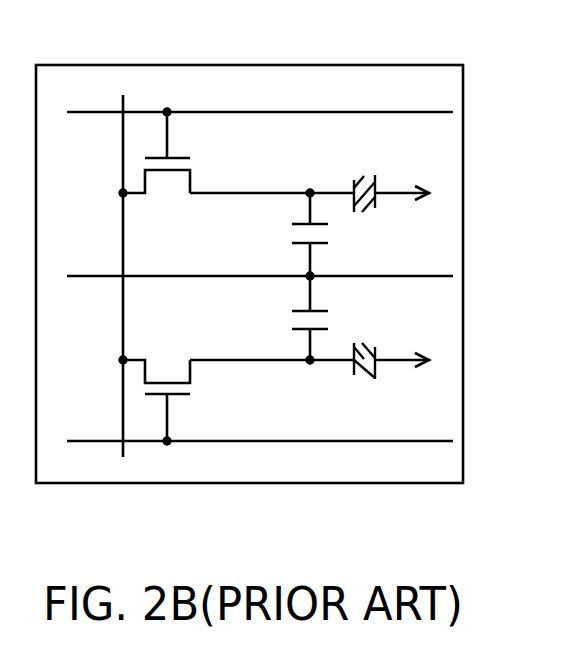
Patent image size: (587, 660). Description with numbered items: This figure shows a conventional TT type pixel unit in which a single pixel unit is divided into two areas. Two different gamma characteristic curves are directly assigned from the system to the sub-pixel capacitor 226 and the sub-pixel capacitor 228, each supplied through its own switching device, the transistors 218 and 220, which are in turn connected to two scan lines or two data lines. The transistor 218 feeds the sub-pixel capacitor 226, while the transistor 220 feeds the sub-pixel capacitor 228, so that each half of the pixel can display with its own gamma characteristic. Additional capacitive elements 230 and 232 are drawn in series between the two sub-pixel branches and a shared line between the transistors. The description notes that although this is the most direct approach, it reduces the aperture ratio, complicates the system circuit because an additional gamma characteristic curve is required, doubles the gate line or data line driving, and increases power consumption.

The transistor 218 is at (170, 148).
The transistor 220 is at (170, 409).
The sub-pixel capacitor 226 is at (367, 176).
The sub-pixel capacitor 228 is at (368, 378).
The first storage capacitor 230 is at (332, 233).
The second storage capacitor 232 is at (332, 322).